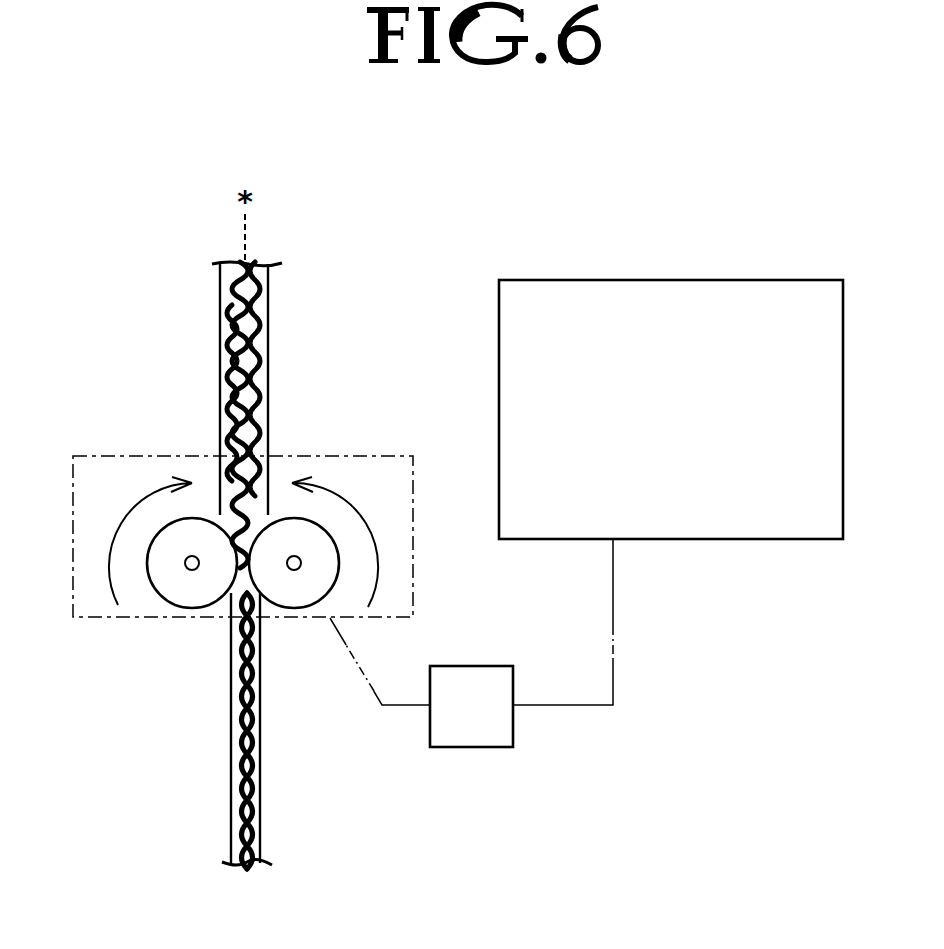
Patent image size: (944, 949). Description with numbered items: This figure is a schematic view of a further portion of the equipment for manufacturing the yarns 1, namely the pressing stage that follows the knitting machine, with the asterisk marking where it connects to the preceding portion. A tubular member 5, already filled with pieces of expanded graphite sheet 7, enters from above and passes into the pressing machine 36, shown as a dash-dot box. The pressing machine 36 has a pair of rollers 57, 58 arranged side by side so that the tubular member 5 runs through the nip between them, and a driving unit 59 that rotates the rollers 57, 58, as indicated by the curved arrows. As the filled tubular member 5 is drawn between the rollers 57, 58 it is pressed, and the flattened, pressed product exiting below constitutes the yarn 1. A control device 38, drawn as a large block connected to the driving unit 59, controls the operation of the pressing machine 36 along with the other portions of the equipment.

The yarn 1 is at (205, 860).
The tubular member 5 is at (220, 398).
The expanded graphite sheet 7 is at (262, 360).
The pressing machine 36 is at (73, 456).
The control device 38 is at (708, 280).
The roller 57 is at (178, 607).
The roller 58 is at (290, 607).
The driving unit 59 is at (468, 747).